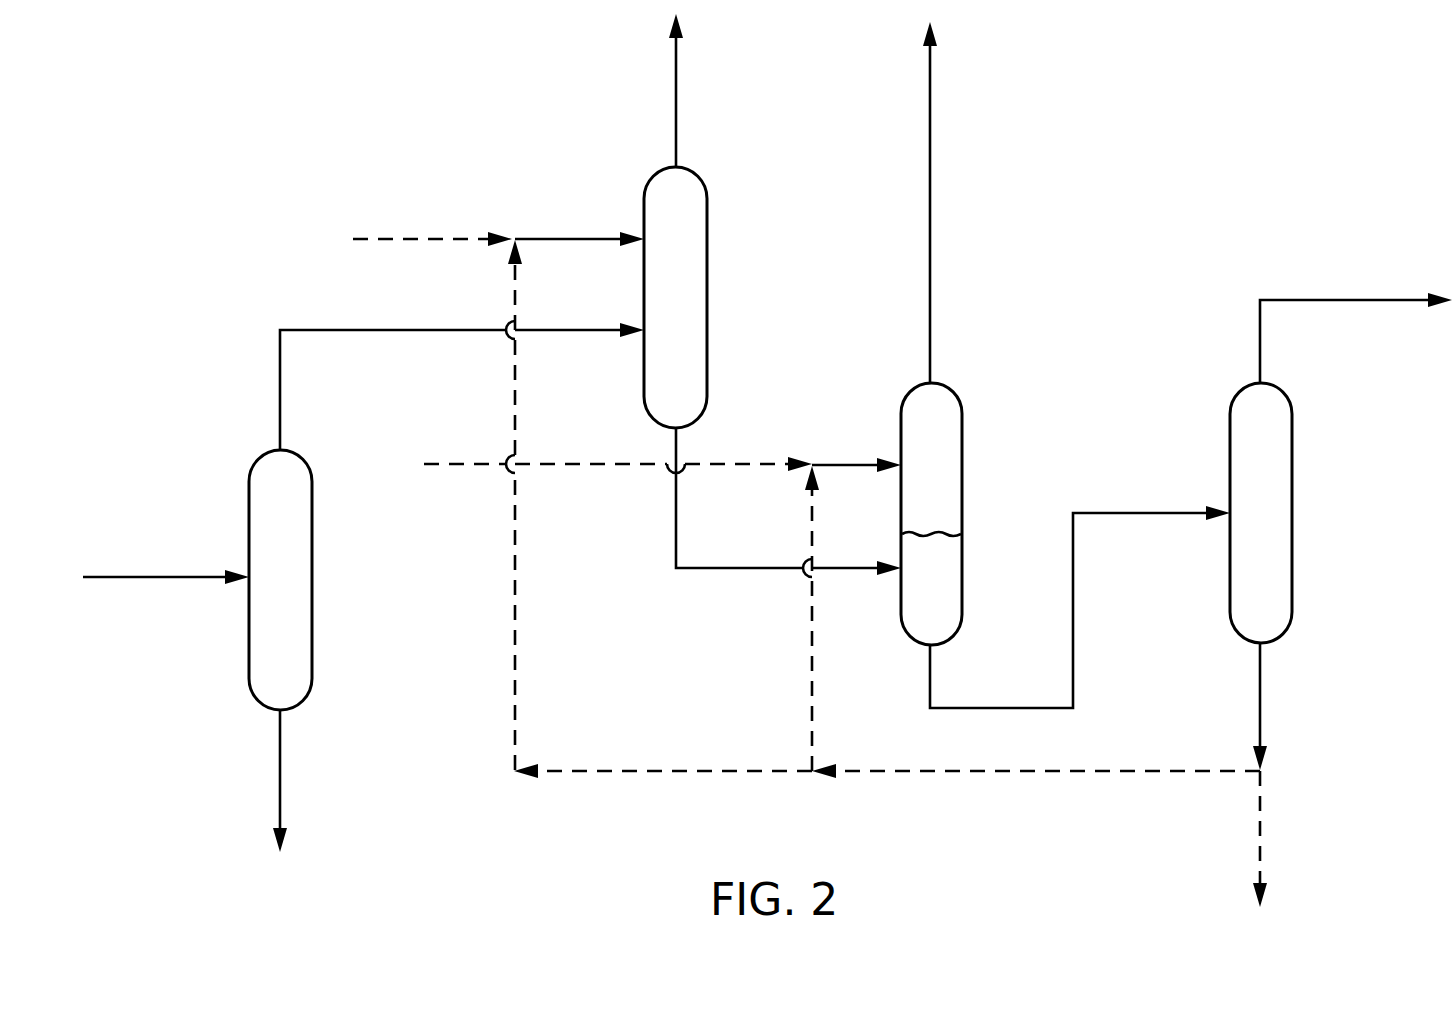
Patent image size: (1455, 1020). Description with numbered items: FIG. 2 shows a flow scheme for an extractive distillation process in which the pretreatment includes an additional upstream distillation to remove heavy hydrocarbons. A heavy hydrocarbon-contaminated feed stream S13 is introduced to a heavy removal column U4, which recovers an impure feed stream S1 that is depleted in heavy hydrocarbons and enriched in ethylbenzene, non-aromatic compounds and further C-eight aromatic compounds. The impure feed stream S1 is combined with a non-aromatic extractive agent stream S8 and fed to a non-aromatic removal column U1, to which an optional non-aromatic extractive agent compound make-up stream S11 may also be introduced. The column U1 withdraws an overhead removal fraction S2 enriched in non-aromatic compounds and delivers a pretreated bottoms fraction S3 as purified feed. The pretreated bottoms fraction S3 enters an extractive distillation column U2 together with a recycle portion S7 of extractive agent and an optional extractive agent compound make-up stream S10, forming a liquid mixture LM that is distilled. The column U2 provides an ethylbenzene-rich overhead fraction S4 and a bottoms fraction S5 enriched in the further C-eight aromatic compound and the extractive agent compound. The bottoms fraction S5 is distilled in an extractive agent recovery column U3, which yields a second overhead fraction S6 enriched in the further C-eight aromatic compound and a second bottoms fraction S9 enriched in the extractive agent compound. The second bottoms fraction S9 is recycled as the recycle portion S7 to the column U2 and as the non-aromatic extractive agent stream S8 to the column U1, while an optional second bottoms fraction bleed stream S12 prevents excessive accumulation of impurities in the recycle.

The non-aromatic removal column U1 is at (656, 305).
The extractive distillation column U2 is at (948, 514).
The extractive agent recovery column U3 is at (1277, 524).
The heavy removal column U4 is at (297, 587).
The liquid mixture LM is at (950, 579).
The impure feed stream S1 is at (388, 332).
The overhead removal fraction S2 is at (676, 63).
The pretreated bottoms fraction S3 is at (731, 570).
The overhead fraction S4 is at (930, 68).
The bottoms fraction S5 is at (1141, 511).
The second overhead fraction S6 is at (1400, 297).
The recycle portion S7 is at (848, 463).
The non-aromatic extractive agent stream S8 is at (567, 238).
The second bottoms fraction S9 is at (1261, 702).
The extractive agent compound make-up stream S10 is at (453, 467).
The non-aromatic extractive agent compound make-up stream S11 is at (389, 238).
The second bottoms fraction bleed stream S12 is at (1261, 868).
The heavy hydrocarbon-contaminated feed stream S13 is at (163, 580).